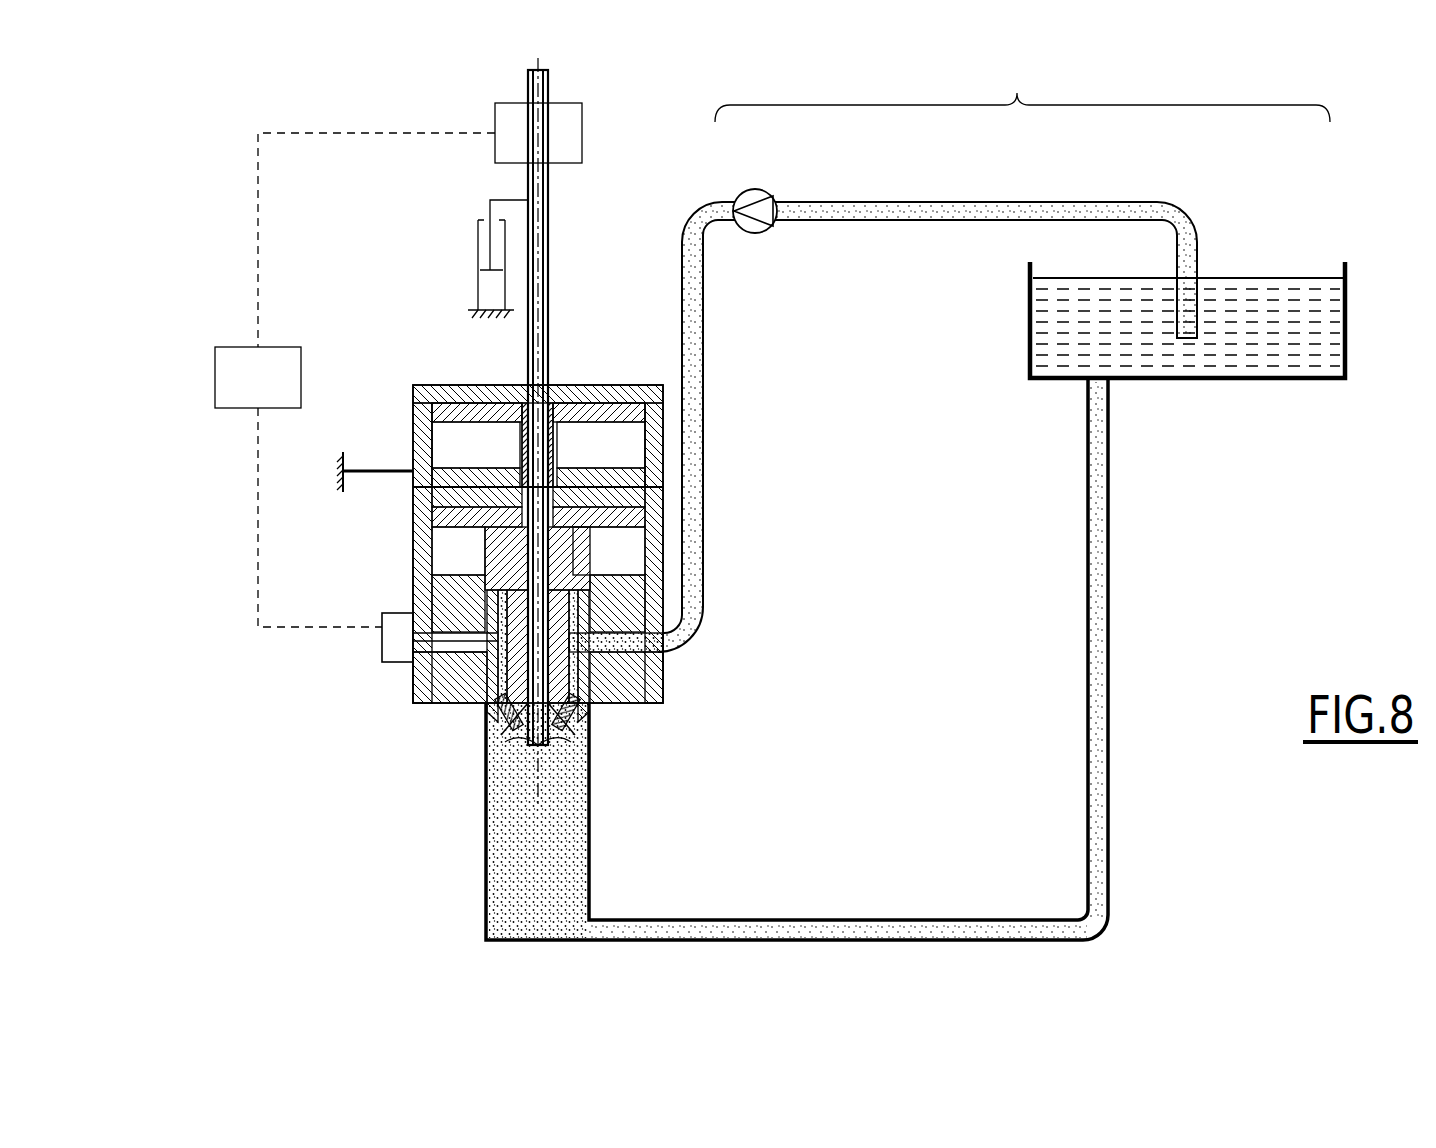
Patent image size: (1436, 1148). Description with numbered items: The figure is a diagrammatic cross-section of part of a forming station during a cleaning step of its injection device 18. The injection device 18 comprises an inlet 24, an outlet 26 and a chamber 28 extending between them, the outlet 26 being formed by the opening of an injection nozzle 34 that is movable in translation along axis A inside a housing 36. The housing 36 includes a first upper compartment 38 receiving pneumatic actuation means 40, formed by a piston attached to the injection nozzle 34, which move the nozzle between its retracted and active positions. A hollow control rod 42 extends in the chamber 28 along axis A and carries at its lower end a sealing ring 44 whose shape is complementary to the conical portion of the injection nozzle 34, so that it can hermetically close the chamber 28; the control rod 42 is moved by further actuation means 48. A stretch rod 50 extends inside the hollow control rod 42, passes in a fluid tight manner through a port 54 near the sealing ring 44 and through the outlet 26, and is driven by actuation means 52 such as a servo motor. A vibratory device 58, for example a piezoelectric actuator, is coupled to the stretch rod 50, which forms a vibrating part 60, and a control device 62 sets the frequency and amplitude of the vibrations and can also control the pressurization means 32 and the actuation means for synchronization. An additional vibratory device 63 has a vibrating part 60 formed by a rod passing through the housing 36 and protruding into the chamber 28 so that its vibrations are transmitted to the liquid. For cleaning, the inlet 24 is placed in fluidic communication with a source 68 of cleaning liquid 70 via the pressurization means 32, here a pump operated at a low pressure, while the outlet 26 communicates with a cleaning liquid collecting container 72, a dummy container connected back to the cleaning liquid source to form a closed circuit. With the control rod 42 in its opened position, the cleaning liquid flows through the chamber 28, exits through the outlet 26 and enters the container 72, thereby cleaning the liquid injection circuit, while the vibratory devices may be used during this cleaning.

The axis A is at (546, 90).
The injection device 18 is at (422, 560).
The inlet 24 is at (650, 648).
The outlet 26 is at (520, 742).
The chamber 28 is at (492, 680).
The pressurization means 32 is at (760, 190).
The injection nozzle 34 is at (490, 686).
The housing 36 is at (418, 519).
The first upper compartment 38 is at (622, 548).
The actuation means 40 is at (640, 512).
The hollow control rod 42 is at (580, 696).
The sealing ring 44 is at (440, 440).
The actuation means 48 is at (462, 386).
The stretch rod 50 is at (548, 200).
The actuation means 52 is at (483, 283).
The port 54 is at (580, 612).
The vibratory device 58 is at (500, 112).
The vibrating part 60 is at (545, 297).
The control device 62 is at (215, 375).
The additional vibratory device 63 is at (384, 652).
The source of cleaning liquid 68 is at (994, 356).
The cleaning liquid 70 is at (1275, 372).
The cleaning liquid collecting container 72 is at (492, 827).